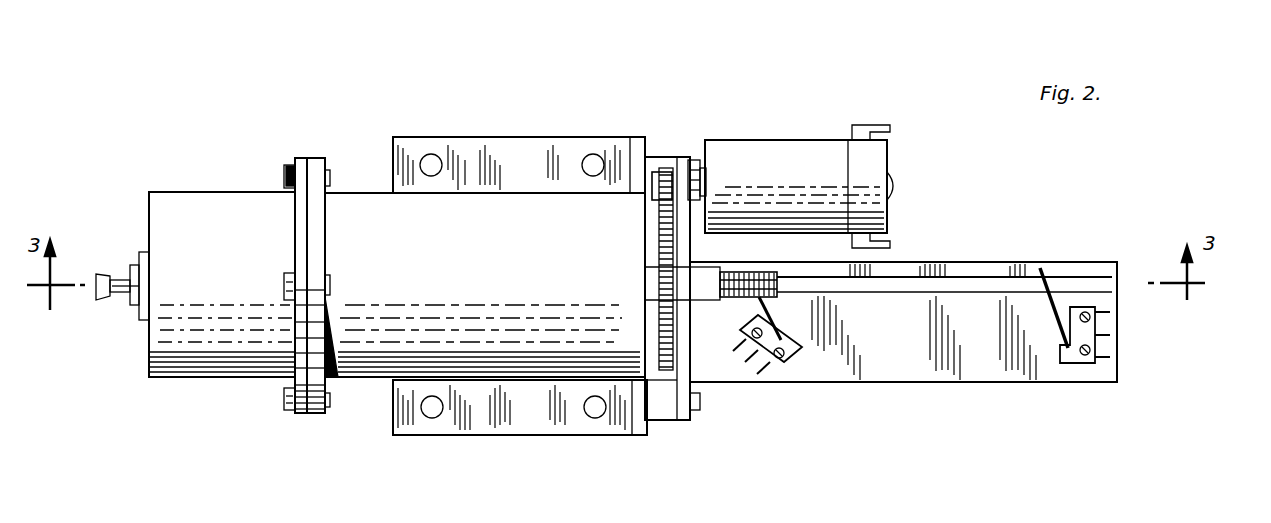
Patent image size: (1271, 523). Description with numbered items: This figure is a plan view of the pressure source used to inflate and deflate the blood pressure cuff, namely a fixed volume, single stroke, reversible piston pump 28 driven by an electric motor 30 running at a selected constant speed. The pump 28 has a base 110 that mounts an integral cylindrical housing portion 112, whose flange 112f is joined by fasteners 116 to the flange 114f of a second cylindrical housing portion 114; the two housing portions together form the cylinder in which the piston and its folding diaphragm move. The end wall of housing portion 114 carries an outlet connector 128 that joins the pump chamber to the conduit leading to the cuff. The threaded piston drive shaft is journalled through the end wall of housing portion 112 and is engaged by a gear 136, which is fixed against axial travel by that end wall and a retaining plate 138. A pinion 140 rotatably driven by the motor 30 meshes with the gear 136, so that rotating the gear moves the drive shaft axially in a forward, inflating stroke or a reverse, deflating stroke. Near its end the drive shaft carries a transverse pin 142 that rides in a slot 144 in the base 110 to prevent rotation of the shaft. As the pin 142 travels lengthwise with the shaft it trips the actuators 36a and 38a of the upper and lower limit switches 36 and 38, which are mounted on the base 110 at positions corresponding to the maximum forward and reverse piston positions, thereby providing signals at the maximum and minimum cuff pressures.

The piston pump 28 is at (569, 108).
The electric motor 30 is at (797, 138).
The upper limit switch 36 is at (797, 357).
The actuator 36a is at (778, 322).
The lower limit switch 38 is at (1080, 366).
The actuator 38a is at (1050, 309).
The base 110 is at (508, 419).
The cylindrical housing portion 112 is at (433, 266).
The flange 112f is at (316, 158).
The second cylindrical housing portion 114 is at (198, 378).
The flange 114f is at (300, 158).
The fasteners 116 is at (285, 182).
The outlet connector 128 is at (100, 292).
The gear 136 is at (660, 239).
The retaining plate 138 is at (700, 352).
The pinion 140 is at (665, 168).
The transverse pin 142 is at (764, 284).
The slot 144 is at (930, 272).